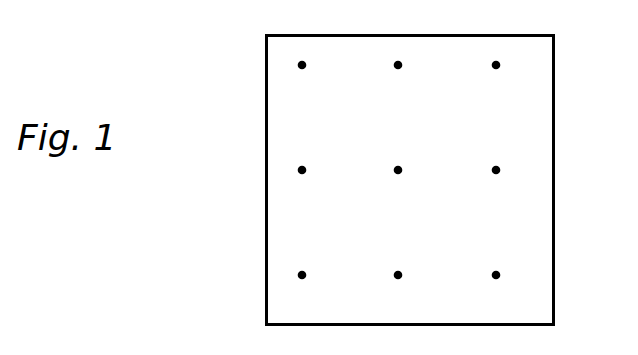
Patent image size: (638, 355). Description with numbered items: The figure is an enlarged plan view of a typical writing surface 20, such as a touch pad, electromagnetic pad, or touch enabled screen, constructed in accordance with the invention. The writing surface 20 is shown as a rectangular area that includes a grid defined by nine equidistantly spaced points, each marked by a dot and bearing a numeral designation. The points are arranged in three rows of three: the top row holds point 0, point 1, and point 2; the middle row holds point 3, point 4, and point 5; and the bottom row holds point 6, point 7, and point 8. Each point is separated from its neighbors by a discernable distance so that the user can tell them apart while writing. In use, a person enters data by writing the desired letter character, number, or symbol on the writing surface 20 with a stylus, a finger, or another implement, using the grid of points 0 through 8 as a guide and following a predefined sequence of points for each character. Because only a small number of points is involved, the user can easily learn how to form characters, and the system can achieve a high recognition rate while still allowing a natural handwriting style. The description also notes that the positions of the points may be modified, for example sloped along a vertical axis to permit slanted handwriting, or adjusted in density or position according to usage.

The writing surface 20 is at (265, 181).
The point 0 is at (304, 67).
The point 1 is at (400, 67).
The point 2 is at (498, 67).
The point 3 is at (304, 172).
The point 4 is at (400, 172).
The point 5 is at (498, 172).
The point 6 is at (304, 277).
The point 7 is at (400, 277).
The point 8 is at (498, 277).